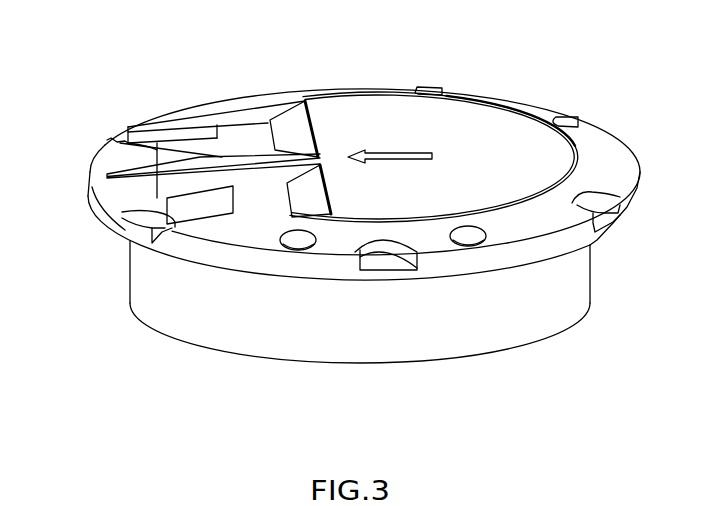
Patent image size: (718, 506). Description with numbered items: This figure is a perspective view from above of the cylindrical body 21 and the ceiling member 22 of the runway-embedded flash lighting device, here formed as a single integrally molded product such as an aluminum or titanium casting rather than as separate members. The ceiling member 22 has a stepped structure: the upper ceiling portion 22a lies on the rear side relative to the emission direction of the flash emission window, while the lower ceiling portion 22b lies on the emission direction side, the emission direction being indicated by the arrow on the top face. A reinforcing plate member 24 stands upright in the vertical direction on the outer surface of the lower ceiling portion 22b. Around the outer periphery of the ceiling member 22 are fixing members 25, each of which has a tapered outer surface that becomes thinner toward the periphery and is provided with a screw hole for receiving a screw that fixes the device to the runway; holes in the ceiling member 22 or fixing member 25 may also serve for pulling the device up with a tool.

The cylindrical body 21 is at (577, 270).
The ceiling member 22 is at (613, 160).
The upper ceiling portion 22a is at (508, 108).
The lower ceiling portion 22b is at (235, 143).
The reinforcing plate member 24 is at (236, 174).
The fixing member 25 is at (598, 213).